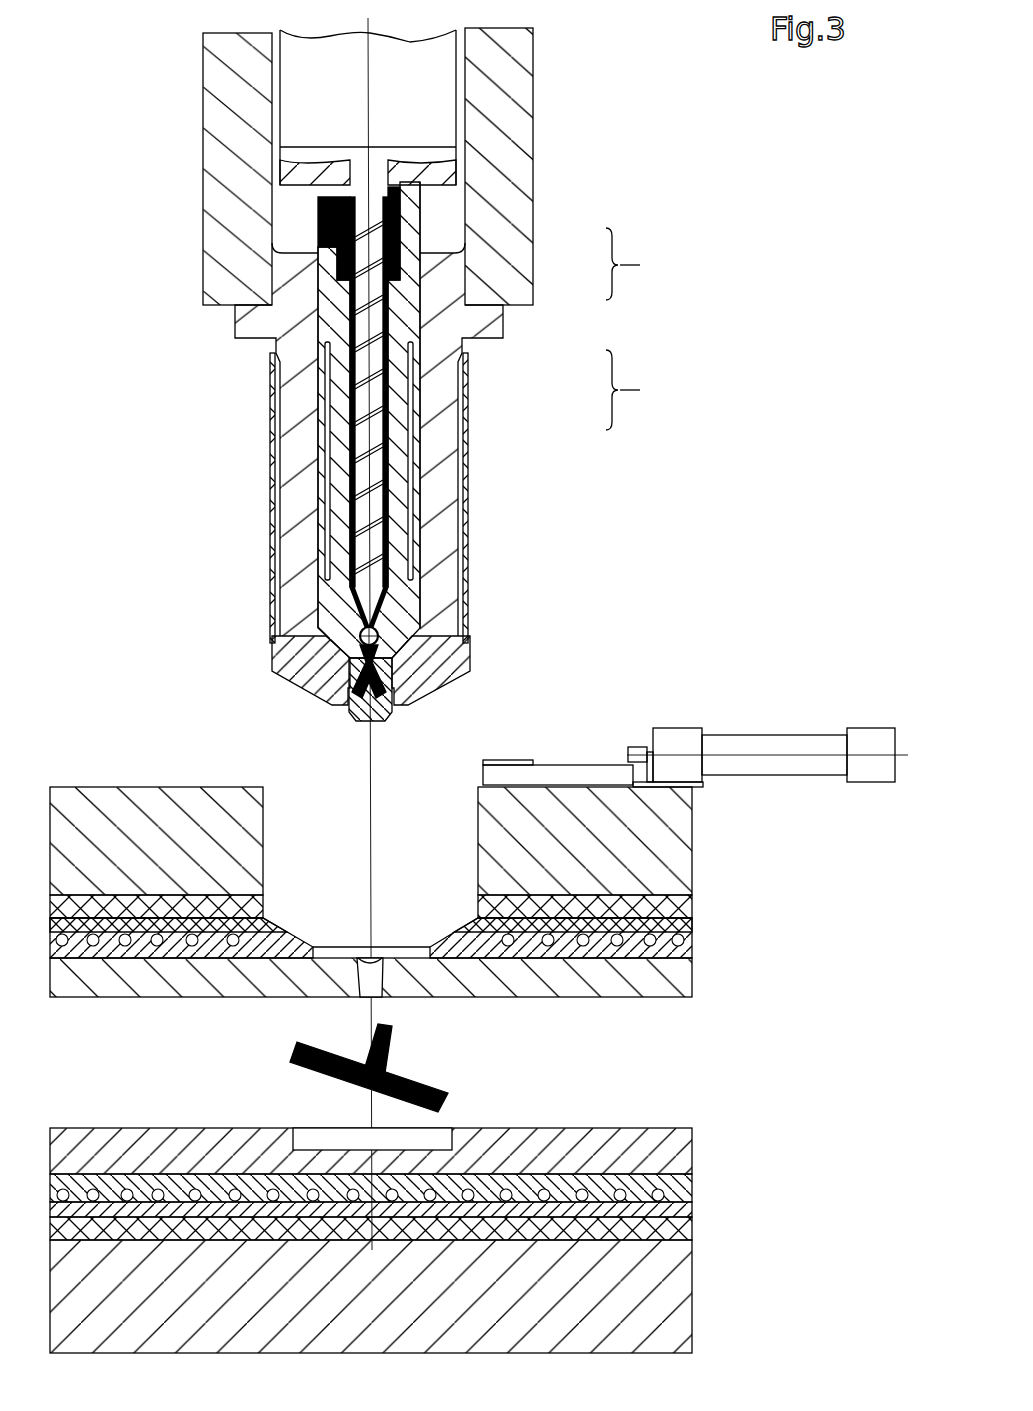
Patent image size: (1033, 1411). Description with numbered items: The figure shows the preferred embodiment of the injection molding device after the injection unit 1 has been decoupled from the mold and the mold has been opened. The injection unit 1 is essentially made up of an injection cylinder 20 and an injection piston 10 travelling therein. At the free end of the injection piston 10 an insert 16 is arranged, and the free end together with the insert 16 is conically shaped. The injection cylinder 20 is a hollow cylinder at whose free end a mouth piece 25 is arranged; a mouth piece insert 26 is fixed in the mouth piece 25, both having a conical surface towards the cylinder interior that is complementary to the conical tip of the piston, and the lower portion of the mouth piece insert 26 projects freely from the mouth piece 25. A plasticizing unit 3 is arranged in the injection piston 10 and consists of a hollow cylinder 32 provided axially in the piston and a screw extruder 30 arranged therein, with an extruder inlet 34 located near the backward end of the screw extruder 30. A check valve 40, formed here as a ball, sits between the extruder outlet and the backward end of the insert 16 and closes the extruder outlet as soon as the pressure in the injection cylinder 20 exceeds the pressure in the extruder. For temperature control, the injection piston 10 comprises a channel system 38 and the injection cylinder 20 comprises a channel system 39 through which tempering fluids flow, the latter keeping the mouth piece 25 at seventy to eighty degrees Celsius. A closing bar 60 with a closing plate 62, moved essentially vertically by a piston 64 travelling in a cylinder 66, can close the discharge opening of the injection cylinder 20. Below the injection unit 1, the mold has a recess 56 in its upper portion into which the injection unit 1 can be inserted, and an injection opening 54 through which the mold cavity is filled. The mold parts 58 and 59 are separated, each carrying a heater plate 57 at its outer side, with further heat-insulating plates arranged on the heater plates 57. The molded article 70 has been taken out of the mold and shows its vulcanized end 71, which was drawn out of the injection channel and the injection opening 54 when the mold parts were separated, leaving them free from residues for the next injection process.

The injection unit 1 is at (450, 420).
The plasticizing unit 3 is at (472, 308).
The injection piston 10 is at (403, 470).
The insert 16 is at (387, 662).
The injection cylinder 20 is at (443, 397).
The mouth piece 25 is at (300, 660).
The mouth piece insert 26 is at (349, 713).
The screw extruder 30 is at (373, 327).
The hollow cylinder 32 is at (383, 302).
The extruder inlet 34 is at (318, 233).
The channel system 38 is at (330, 407).
The channel system 39 is at (280, 517).
The check valve 40 is at (378, 637).
The injection opening 54 is at (382, 960).
The recess 56 is at (632, 855).
The heater plate 57 is at (687, 932).
The mold part 58 is at (655, 1157).
The mold part 59 is at (660, 980).
The closing bar 60 is at (695, 712).
The closing plate 62 is at (525, 758).
The piston 64 is at (655, 752).
The cylinder 66 is at (810, 745).
The molded article 70 is at (435, 1082).
The vulcanized end 71 is at (390, 1030).